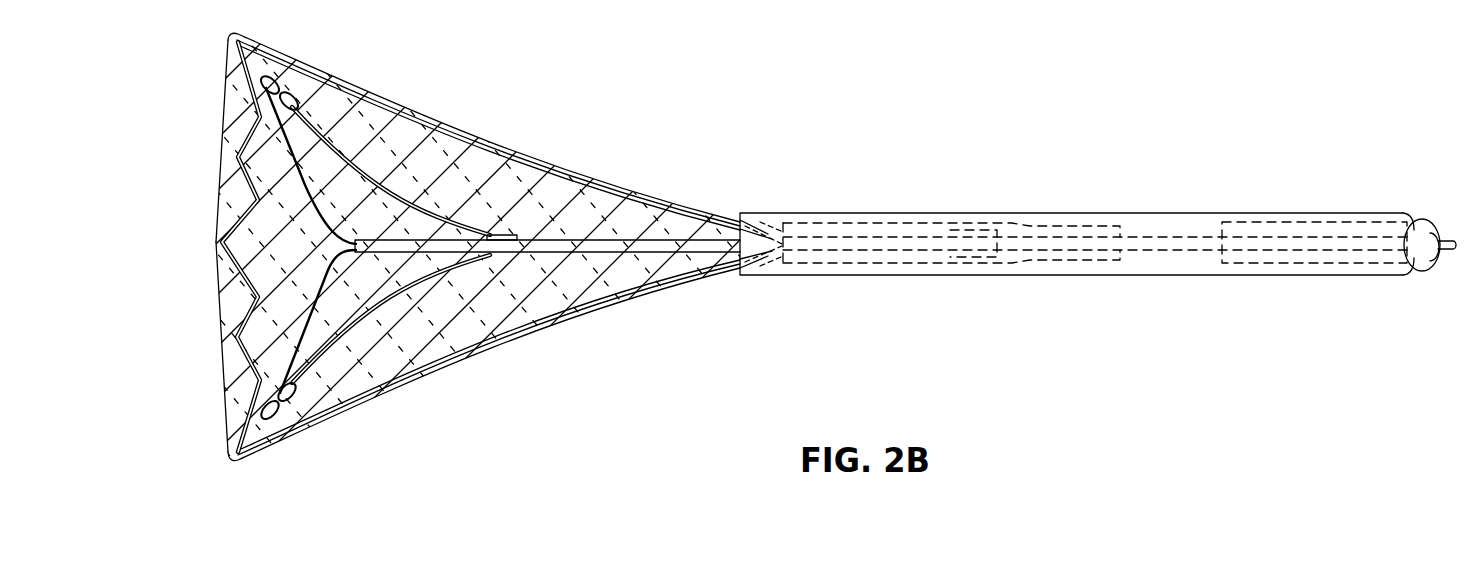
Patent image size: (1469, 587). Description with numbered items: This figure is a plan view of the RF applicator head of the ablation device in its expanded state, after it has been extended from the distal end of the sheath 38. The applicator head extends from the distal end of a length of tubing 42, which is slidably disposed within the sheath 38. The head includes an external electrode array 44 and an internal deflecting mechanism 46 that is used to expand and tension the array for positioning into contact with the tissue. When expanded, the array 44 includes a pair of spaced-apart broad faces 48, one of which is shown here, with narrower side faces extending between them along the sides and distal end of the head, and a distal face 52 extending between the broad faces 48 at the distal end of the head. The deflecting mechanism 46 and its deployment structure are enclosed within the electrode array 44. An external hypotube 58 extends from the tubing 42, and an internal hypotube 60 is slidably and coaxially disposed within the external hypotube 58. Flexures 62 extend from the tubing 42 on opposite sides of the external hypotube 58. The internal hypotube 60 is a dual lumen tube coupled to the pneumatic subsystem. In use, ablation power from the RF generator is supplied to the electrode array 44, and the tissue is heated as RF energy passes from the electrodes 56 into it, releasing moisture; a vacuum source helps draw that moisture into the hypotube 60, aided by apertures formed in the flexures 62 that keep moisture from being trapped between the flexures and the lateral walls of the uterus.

The sheath 38 is at (1020, 278).
The tubing 42 is at (890, 268).
The external electrode array 44 is at (236, 112).
The internal deflecting mechanism 46 is at (222, 242).
The broad face 48 is at (402, 162).
The distal face 52 is at (226, 376).
The electrodes 56 is at (537, 308).
The external hypotube 58 is at (607, 248).
The internal hypotube 60 is at (397, 303).
The flexures 62 is at (483, 352).